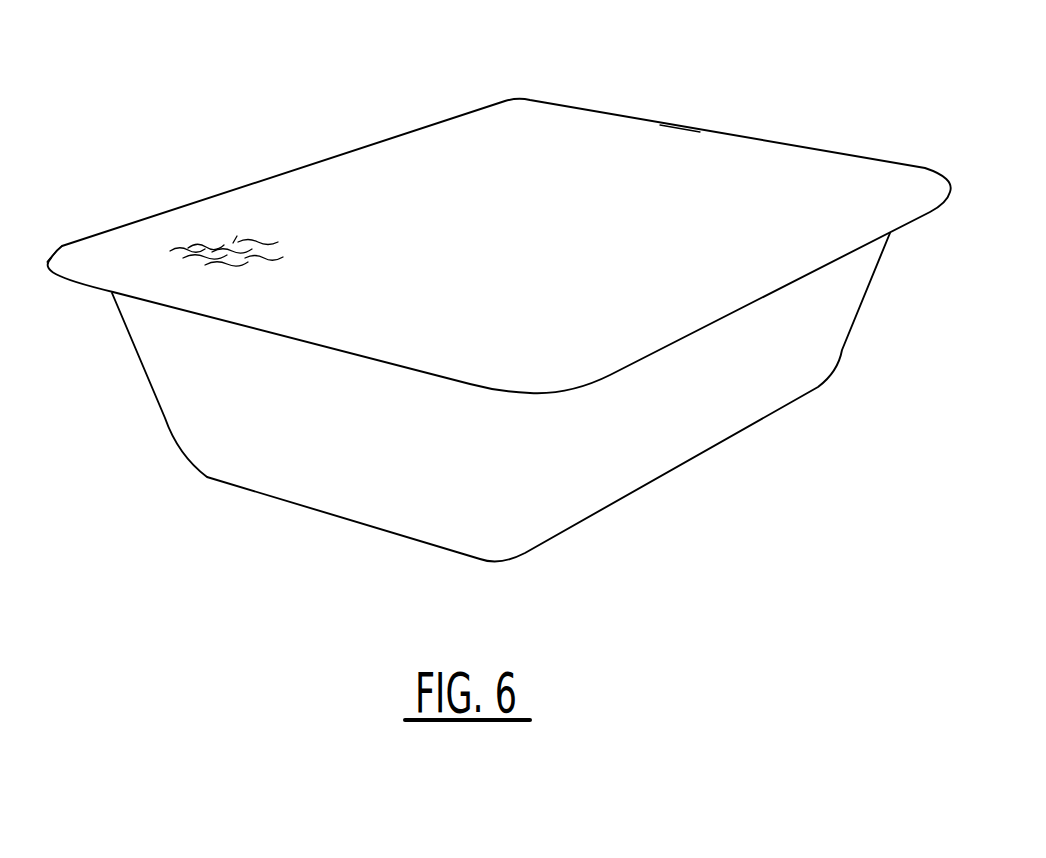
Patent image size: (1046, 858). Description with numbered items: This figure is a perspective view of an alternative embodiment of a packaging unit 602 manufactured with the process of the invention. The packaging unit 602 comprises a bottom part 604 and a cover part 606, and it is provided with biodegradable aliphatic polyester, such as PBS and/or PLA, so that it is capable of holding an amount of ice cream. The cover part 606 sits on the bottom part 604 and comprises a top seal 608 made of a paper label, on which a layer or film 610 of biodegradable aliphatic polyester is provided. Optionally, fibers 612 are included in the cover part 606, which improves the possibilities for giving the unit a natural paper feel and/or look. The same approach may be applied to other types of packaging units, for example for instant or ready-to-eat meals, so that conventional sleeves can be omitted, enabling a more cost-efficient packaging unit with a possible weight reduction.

The packaging unit 602 is at (499, 288).
The bottom part 604 is at (197, 428).
The cover part 606 is at (92, 233).
The top seal 608 is at (867, 113).
The layer or film 610 is at (687, 183).
The fibers 612 is at (227, 238).